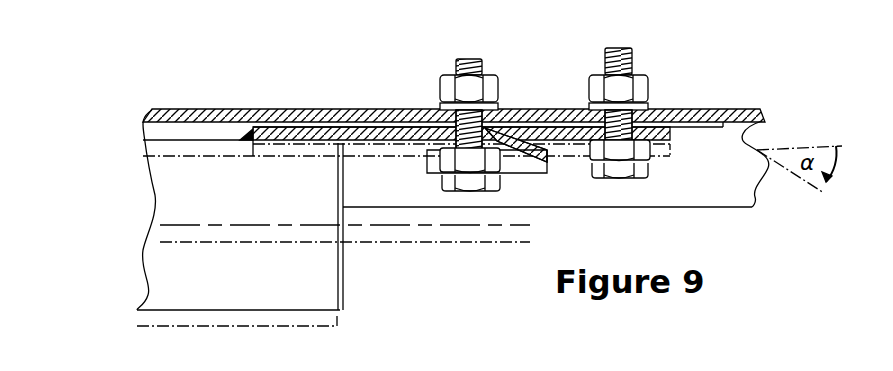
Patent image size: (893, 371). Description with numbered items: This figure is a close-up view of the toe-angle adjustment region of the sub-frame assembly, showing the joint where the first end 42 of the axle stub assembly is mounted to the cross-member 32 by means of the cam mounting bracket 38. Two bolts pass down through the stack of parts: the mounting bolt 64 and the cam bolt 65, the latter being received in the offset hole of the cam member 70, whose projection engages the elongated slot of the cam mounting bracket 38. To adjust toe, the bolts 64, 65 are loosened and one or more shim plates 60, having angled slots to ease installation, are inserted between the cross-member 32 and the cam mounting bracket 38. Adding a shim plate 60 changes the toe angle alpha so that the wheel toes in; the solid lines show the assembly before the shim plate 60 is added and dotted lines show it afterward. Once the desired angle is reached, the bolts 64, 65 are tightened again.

The cross-member 32 is at (750, 190).
The cam mounting bracket 38 is at (670, 129).
The first end of axle stub assembly 42 is at (310, 275).
The shim plate 60 is at (718, 123).
The mounting bolt 64 is at (638, 62).
The cam bolt 65 is at (483, 64).
The cam member 70 is at (513, 148).